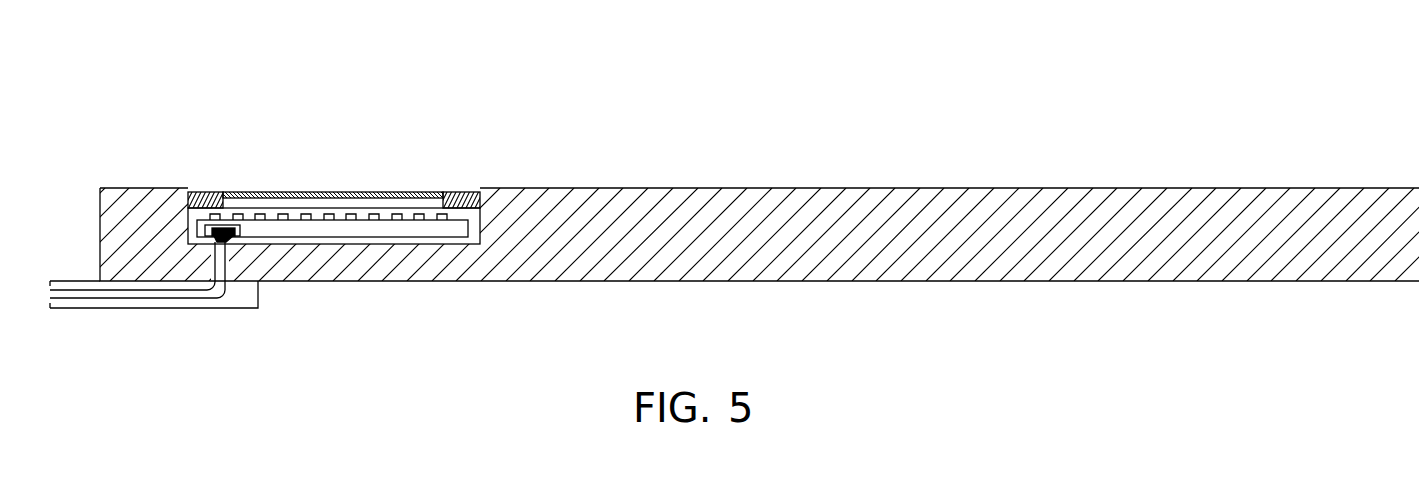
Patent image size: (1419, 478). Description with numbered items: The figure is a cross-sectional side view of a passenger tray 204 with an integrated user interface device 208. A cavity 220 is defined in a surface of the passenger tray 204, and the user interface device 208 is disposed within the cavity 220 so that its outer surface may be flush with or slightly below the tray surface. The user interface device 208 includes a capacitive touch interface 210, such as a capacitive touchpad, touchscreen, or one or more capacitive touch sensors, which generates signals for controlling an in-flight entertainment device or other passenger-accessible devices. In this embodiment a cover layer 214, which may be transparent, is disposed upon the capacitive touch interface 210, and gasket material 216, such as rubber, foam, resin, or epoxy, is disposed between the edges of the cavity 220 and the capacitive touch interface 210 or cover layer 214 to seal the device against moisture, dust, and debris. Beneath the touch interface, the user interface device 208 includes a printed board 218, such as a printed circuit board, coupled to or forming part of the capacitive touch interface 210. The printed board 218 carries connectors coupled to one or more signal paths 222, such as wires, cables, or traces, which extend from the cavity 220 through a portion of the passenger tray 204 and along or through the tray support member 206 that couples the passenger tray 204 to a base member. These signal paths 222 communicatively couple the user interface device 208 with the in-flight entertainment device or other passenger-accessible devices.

The passenger tray 204 is at (780, 188).
The tray support member 206 is at (173, 307).
The user interface device 208 is at (457, 168).
The capacitive touch interface 210 is at (336, 212).
The cover layer 214 is at (245, 190).
The gasket material 216 is at (207, 190).
The printed board 218 is at (337, 225).
The cavity 220 is at (457, 244).
The signal paths 222 is at (117, 293).